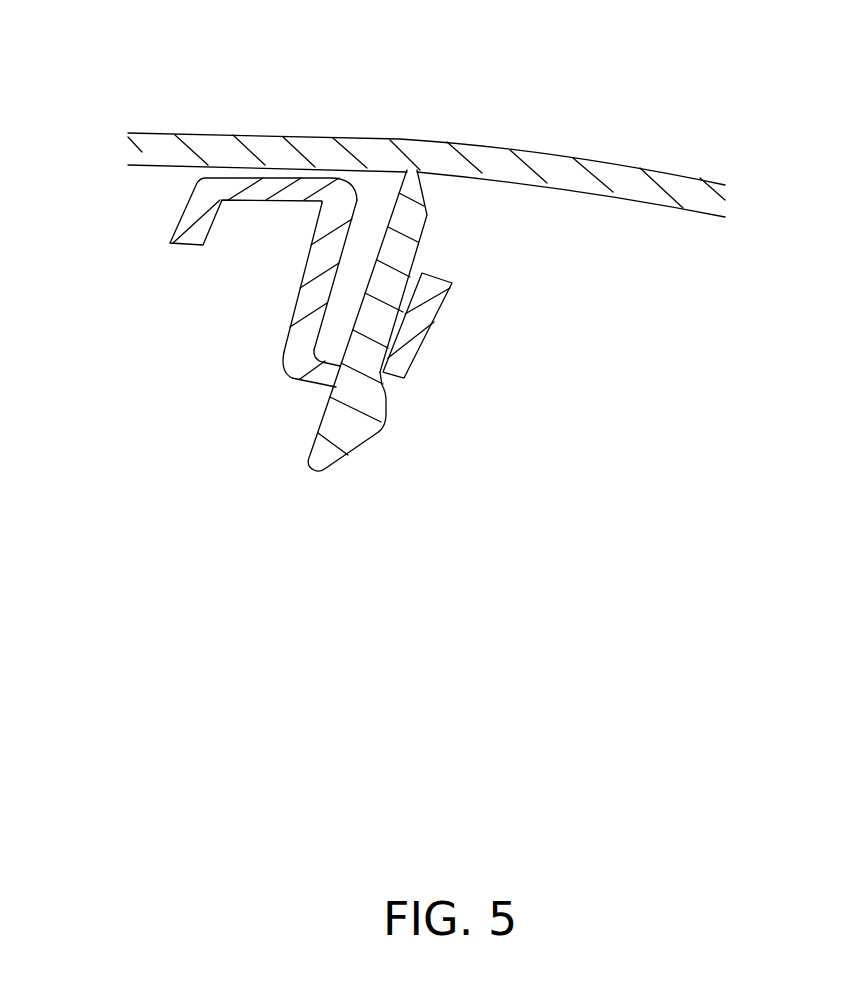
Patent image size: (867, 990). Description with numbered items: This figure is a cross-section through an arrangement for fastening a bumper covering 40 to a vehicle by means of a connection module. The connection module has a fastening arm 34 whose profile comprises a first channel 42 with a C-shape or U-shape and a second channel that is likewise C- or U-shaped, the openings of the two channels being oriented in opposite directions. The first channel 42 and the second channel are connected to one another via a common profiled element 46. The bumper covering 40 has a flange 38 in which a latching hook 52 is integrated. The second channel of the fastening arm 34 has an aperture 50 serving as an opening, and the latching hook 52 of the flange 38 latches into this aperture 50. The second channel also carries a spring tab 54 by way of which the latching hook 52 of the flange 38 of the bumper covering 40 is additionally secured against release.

The fastening arm 34 is at (206, 312).
The flange 38 is at (409, 353).
The bumper covering 40 is at (613, 122).
The first channel 42 is at (257, 228).
The common profiled element 46 is at (308, 307).
The aperture 50 is at (397, 390).
The latching hook 52 is at (355, 458).
The spring tab 54 is at (285, 382).